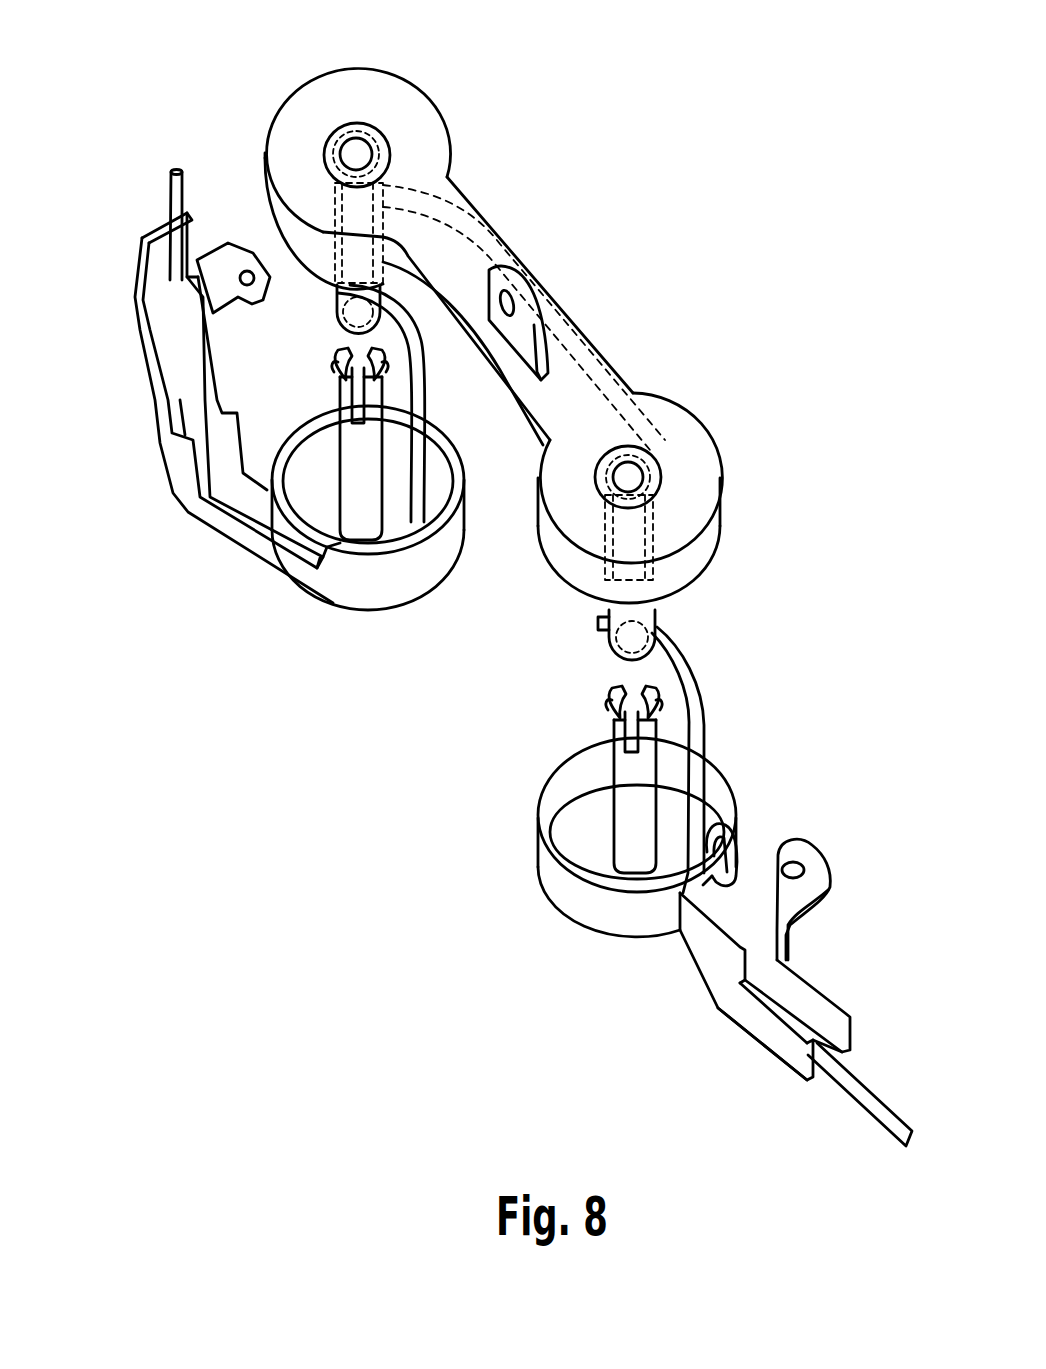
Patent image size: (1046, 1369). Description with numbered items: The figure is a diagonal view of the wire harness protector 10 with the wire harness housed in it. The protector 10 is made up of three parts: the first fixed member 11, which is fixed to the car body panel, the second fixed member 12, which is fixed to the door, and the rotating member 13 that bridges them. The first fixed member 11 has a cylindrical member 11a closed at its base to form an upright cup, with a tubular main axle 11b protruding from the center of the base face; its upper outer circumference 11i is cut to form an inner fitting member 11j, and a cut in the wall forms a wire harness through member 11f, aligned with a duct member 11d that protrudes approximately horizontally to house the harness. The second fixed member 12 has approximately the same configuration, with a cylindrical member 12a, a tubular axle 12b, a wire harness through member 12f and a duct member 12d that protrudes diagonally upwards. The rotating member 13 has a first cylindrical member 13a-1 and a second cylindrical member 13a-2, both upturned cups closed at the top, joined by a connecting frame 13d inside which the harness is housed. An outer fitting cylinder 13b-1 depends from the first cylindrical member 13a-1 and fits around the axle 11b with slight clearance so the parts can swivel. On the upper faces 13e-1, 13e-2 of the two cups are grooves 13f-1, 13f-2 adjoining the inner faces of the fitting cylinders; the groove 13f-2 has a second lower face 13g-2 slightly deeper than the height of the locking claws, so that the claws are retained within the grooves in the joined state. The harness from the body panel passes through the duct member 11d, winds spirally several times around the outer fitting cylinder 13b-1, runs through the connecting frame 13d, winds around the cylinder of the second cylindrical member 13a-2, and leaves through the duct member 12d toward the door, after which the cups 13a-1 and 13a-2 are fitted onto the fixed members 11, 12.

The wire harness protector 10 is at (585, 196).
The first fixed member 11 is at (680, 933).
The cylindrical member 11a is at (563, 890).
The tubular main axle 11b is at (623, 770).
The duct member 11d is at (742, 1026).
The wire harness through member 11f is at (712, 830).
The upper outer circumference 11i is at (542, 813).
The inner fitting member 11j is at (557, 773).
The second fixed member 12 is at (297, 587).
The cylindrical member 12a is at (390, 587).
The tubular axle 12b is at (350, 433).
The duct member 12d is at (173, 477).
The wire harness through member 12f is at (303, 520).
The rotating member 13 is at (607, 360).
The first cylindrical member 13a-1 is at (710, 532).
The second cylindrical member 13a-2 is at (447, 177).
The outer fitting cylinder 13b-1 is at (657, 627).
The connecting frame 13d is at (553, 320).
The upper face 13e-1 is at (593, 530).
The upper face 13e-2 is at (417, 110).
The groove 13f-1 is at (658, 470).
The groove 13f-2 is at (373, 127).
The second lower face 13g-2 is at (333, 143).